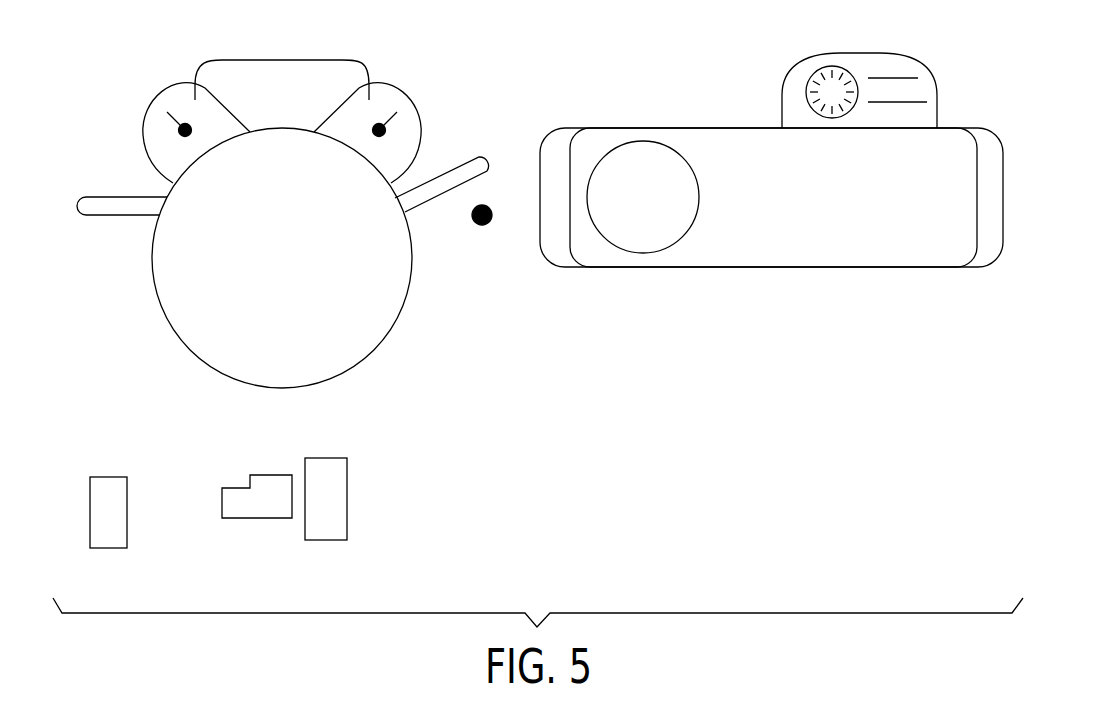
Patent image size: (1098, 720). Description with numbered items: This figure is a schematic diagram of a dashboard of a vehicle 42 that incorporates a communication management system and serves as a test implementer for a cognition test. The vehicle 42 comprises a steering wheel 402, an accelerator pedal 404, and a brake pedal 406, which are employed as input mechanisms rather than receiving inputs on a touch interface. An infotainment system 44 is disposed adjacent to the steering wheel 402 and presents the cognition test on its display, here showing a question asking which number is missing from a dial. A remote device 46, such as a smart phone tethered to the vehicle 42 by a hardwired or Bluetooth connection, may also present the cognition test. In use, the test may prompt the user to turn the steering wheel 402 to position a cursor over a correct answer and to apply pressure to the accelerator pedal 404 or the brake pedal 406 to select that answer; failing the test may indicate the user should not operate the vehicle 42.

The vehicle 42 is at (970, 82).
The infotainment system 44 is at (643, 128).
The remote device 46 is at (858, 53).
The steering wheel 402 is at (262, 274).
The accelerator pedal 404 is at (347, 502).
The brake pedal 406 is at (257, 518).